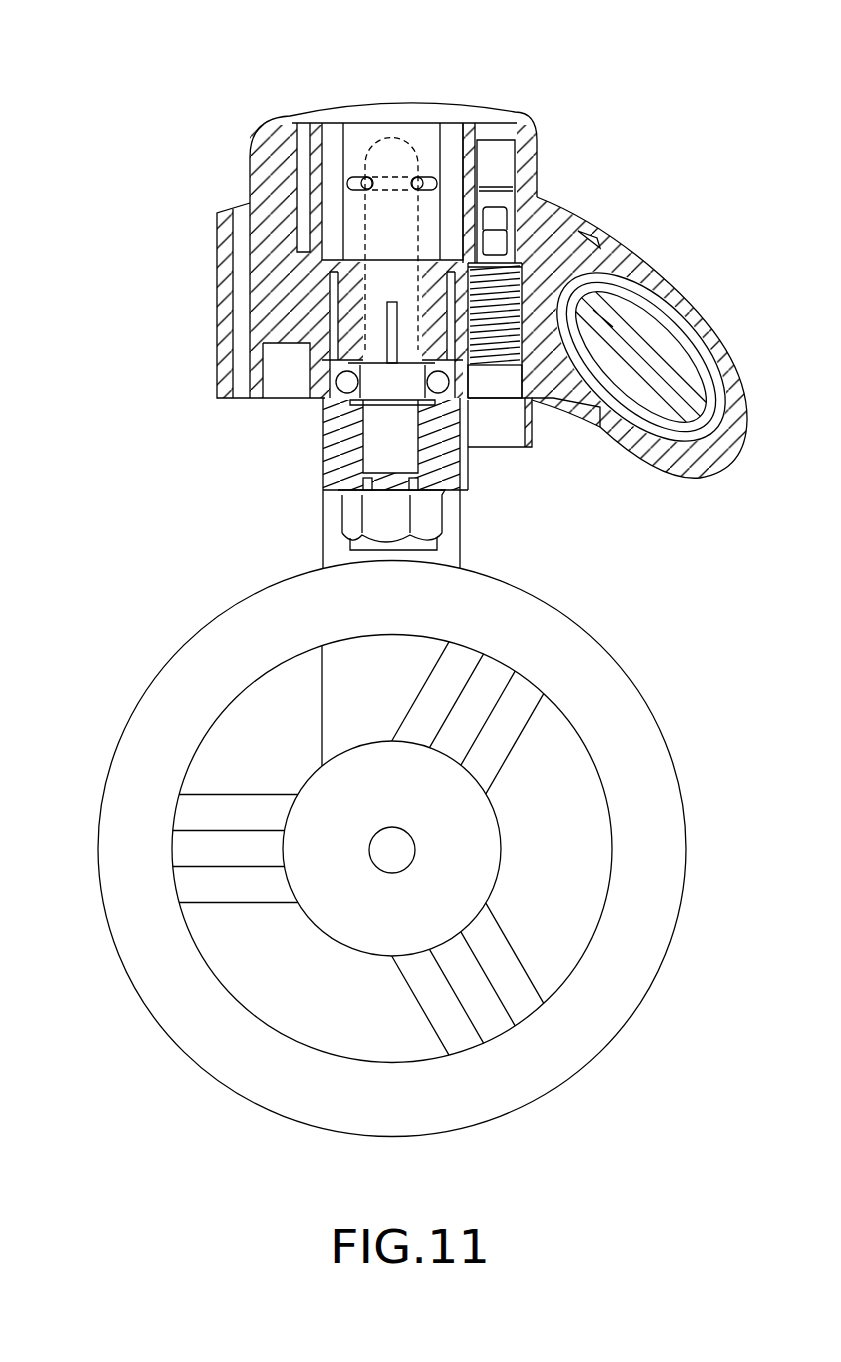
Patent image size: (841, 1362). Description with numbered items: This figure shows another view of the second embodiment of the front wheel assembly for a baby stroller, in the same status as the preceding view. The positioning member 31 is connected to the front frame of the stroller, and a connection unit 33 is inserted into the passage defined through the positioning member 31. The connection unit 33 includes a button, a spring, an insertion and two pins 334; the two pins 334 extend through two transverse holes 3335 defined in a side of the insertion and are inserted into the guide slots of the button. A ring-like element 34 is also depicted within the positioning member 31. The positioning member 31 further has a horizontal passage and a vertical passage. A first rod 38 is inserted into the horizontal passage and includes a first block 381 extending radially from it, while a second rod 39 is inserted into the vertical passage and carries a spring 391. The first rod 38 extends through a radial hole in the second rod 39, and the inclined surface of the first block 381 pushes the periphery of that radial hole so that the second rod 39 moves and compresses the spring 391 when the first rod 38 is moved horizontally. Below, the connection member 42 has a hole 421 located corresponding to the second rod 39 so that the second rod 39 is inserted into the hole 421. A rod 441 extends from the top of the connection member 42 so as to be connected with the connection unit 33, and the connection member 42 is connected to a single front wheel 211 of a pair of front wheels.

The connection unit 33 is at (322, 100).
The positioning member 31 is at (252, 158).
The ring 34 is at (388, 235).
The pins 334 is at (417, 177).
The transverse holes 3335 is at (435, 180).
The first rod 38 is at (500, 242).
The first block 381 is at (493, 218).
The second rod 39 is at (497, 385).
The spring 391 is at (517, 283).
The connection member 42 is at (333, 463).
The hole 421 is at (487, 428).
The rod 441 is at (378, 377).
The single front wheel 211 is at (150, 742).